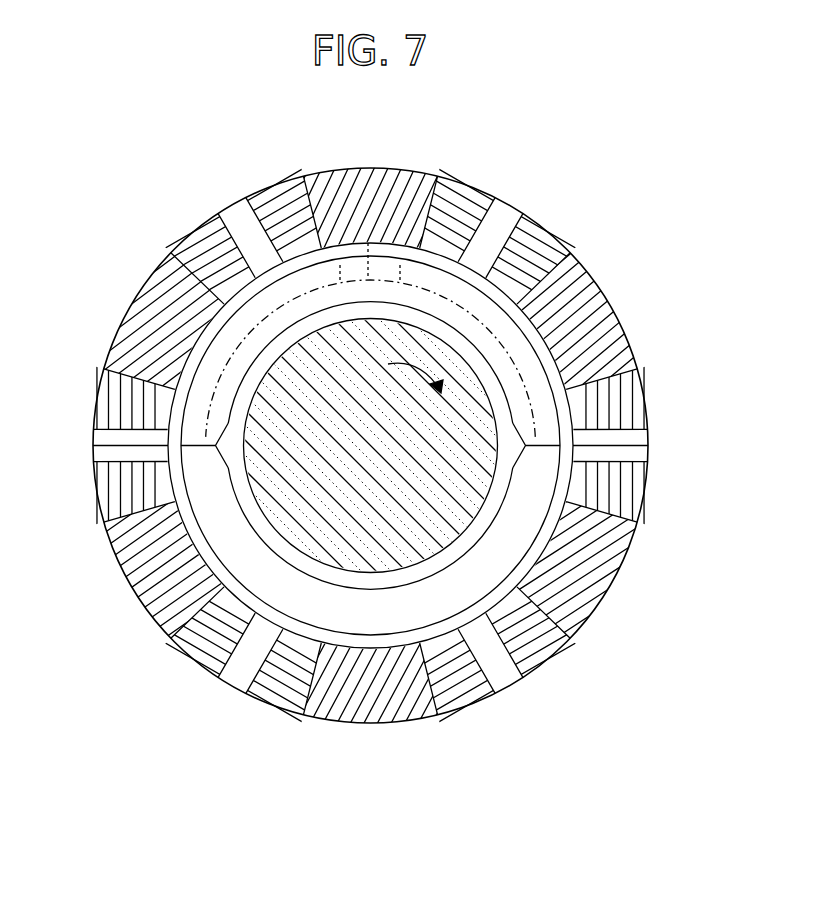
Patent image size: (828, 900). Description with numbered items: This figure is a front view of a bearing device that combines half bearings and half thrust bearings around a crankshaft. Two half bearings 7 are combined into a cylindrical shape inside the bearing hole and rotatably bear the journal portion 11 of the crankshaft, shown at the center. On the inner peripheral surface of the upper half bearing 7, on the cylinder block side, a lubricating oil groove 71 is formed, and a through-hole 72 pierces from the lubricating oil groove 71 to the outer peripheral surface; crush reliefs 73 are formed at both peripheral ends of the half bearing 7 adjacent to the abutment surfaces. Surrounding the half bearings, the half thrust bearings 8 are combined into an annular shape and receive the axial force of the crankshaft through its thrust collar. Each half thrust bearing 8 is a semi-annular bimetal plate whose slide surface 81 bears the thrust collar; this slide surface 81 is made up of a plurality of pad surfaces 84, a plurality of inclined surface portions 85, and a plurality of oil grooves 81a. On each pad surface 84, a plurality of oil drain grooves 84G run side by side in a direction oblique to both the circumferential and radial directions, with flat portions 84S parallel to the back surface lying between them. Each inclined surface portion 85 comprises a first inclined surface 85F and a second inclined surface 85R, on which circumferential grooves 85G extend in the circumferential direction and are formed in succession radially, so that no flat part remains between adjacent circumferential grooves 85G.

The half bearing 7 is at (578, 288).
The half thrust bearing 8 is at (598, 325).
The journal portion 11 is at (270, 395).
The lubricating oil groove 71 is at (215, 392).
The through-hole 72 is at (369, 277).
The crush relief 73 is at (207, 458).
The slide surface 81 is at (620, 350).
The oil groove 81a is at (492, 208).
The pad surface 84 is at (366, 446).
The oil drain groove 84G is at (360, 187).
The flat portion 84S is at (318, 178).
The inclined surface portion 85 is at (375, 448).
The first inclined surface 85F is at (285, 193).
The second inclined surface 85R is at (448, 190).
The circumferential groove 85G is at (646, 412).